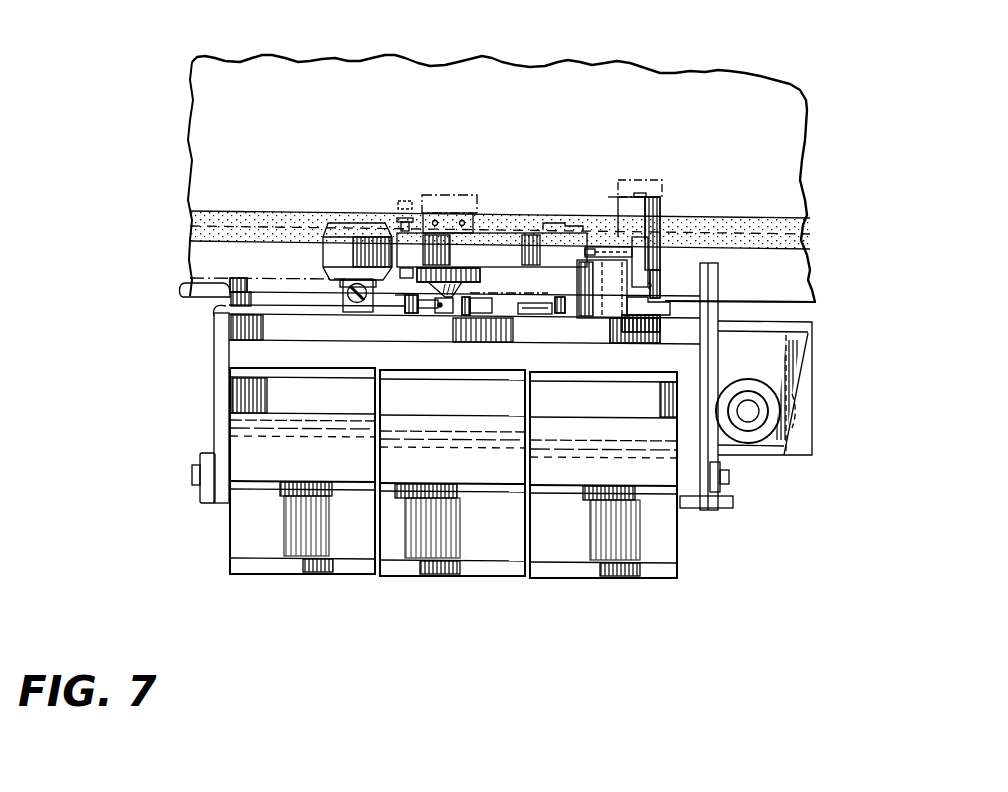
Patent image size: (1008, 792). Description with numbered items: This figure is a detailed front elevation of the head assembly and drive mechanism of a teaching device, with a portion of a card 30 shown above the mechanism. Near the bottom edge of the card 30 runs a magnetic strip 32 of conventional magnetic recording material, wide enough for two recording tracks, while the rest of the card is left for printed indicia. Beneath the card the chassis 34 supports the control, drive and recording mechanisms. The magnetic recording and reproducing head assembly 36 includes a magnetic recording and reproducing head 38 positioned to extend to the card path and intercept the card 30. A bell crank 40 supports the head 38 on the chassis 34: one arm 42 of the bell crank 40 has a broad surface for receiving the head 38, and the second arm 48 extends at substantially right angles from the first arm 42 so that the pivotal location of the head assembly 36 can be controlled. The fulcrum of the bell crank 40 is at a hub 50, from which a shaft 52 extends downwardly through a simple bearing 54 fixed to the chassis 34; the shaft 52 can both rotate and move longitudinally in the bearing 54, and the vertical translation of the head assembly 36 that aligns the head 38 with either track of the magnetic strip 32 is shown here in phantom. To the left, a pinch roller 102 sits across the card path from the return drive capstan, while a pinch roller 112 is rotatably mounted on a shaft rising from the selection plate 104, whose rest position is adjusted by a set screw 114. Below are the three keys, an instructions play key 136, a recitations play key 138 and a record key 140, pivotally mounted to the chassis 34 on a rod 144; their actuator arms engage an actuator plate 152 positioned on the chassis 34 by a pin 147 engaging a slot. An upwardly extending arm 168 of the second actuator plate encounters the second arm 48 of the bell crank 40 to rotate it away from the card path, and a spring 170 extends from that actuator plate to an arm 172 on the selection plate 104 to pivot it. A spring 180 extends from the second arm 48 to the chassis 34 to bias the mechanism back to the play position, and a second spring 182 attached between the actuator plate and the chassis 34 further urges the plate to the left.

The card 30 is at (728, 70).
The magnetic strip 32 is at (812, 221).
The chassis 34 is at (214, 343).
The head assembly 36 is at (490, 234).
The magnetic recording and reproducing head 38 is at (430, 214).
The bell crank 40 is at (668, 190).
The arm of the bell crank 42 is at (553, 258).
The second arm of the bell crank 48 is at (648, 258).
The hub 50 is at (618, 197).
The shaft 52 is at (640, 192).
The bearing 54 is at (568, 307).
The pinch roller 102 is at (335, 248).
The selection plate 104 is at (345, 316).
The pinch roller 112 is at (490, 258).
The set screw 114 is at (358, 306).
The instructions play key 136 is at (625, 409).
The recitations play key 138 is at (474, 408).
The record key 140 is at (320, 406).
The rod 144 is at (730, 478).
The pin 147 is at (748, 405).
The actuator plate 152 is at (812, 445).
The upwardly extending arm 168 is at (592, 316).
The spring 170 is at (524, 306).
The arm 172 is at (547, 303).
The spring 180 is at (455, 315).
The second spring 182 is at (226, 288).